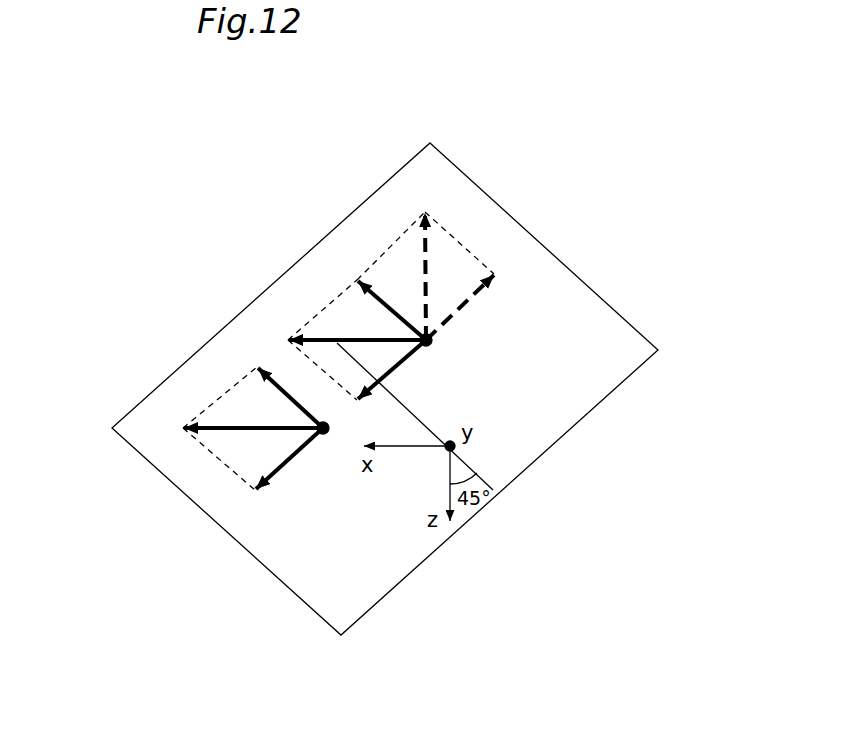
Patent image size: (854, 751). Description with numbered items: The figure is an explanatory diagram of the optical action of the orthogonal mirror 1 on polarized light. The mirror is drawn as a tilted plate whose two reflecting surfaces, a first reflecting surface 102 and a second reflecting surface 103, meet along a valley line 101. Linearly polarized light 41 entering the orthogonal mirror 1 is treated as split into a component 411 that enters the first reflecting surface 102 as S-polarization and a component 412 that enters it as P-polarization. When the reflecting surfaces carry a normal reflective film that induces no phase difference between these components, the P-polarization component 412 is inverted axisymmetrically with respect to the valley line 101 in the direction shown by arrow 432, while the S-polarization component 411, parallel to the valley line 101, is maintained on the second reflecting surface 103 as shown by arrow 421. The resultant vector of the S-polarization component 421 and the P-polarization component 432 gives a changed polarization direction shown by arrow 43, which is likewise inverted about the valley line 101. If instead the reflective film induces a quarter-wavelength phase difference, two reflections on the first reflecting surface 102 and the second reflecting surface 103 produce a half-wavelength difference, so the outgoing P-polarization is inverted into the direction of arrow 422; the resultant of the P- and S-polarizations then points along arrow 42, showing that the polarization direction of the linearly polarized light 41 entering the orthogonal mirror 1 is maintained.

The orthogonal mirror 1 is at (448, 157).
The valley line 101 is at (315, 327).
The first reflecting surface 102 is at (235, 345).
The second reflecting surface 103 is at (558, 285).
The linearly polarized light 41 is at (179, 490).
The S-polarization component 411 is at (277, 390).
The P-polarization component 412 is at (282, 470).
The arrow (resultant polarization direction with quarter-wave film) 42 is at (452, 288).
The arrow (S-polarization component) 421 is at (387, 295).
The arrow (inverted P-polarization direction) 422 is at (393, 370).
The arrow (resultant polarization direction with normal film) 43 is at (550, 280).
The arrow (P-polarization component direction) 432 is at (453, 312).